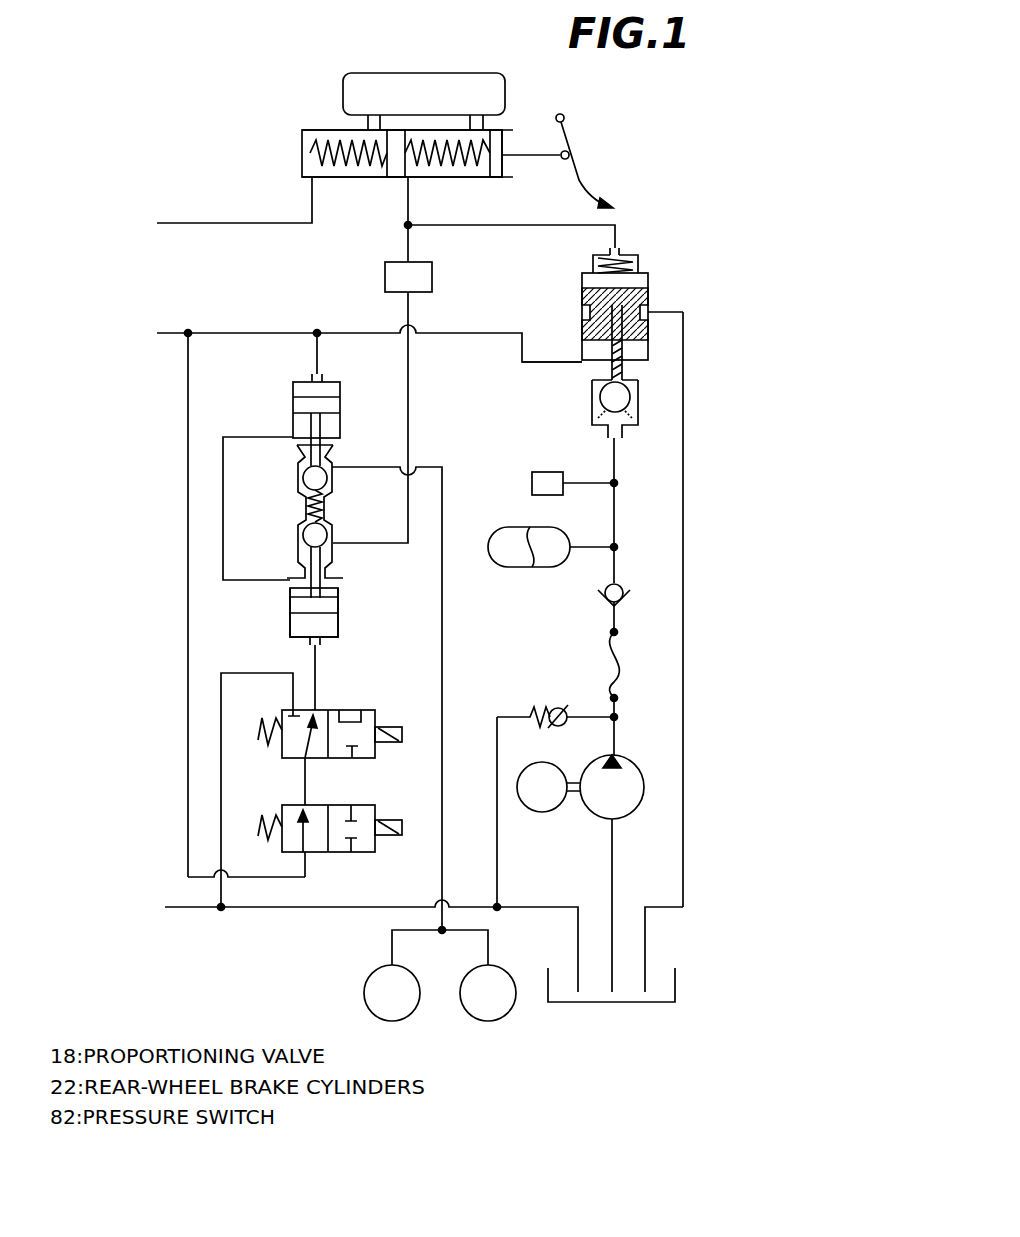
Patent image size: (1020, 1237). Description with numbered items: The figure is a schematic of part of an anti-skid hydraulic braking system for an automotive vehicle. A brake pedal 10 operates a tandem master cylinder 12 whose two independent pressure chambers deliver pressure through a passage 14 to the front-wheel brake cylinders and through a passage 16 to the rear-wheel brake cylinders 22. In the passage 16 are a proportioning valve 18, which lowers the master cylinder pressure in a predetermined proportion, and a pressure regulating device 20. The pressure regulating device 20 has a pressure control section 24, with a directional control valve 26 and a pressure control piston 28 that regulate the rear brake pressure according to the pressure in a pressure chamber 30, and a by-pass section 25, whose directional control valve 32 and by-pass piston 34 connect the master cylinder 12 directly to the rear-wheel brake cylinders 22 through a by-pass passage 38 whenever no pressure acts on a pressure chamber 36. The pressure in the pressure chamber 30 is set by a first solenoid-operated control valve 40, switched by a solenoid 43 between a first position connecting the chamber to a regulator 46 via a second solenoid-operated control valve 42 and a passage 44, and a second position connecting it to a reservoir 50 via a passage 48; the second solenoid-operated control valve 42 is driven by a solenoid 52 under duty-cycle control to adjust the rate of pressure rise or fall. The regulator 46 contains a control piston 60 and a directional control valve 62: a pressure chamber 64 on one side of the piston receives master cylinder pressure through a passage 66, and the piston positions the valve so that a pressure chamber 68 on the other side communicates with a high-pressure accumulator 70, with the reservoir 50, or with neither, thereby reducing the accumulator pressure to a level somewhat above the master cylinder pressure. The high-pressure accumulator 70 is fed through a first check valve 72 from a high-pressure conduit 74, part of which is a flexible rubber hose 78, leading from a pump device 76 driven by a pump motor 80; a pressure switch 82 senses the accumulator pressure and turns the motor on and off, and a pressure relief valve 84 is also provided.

The brake pedal 10 is at (582, 177).
The master cylinder 12 is at (352, 180).
The passage 14 is at (245, 222).
The passage 16 is at (410, 251).
The proportioning valve 18 is at (387, 283).
The pressure regulating device 20 is at (364, 436).
The rear-wheel brake cylinders 22 is at (377, 1000).
The pressure control section 24 is at (343, 585).
The by-pass section 25 is at (290, 467).
The directional control valve 26 is at (338, 558).
The pressure control piston 28 is at (334, 605).
The pressure chamber 30 is at (297, 620).
The directional control valve 32 is at (334, 479).
The by-pass piston 34 is at (293, 405).
The pressure chamber 36 is at (330, 387).
The by-pass passage 38 is at (323, 513).
The first solenoid-operated control valve 40 is at (335, 710).
The second solenoid-operated control valve 42 is at (320, 805).
The solenoid 43 is at (395, 727).
The passage 44 is at (188, 643).
The regulator 46 is at (637, 320).
The passage 48 is at (223, 810).
The reservoir 50 is at (604, 1003).
The solenoid 52 is at (395, 820).
The control piston 60 is at (650, 292).
The directional control valve 62 is at (590, 385).
The pressure chamber 64 is at (647, 270).
The passage 66 is at (536, 226).
The pressure chamber 68 is at (644, 358).
The high-pressure accumulator 70 is at (515, 535).
The first check valve 72 is at (604, 598).
The high-pressure conduit 74 is at (588, 764).
The pump device 76 is at (632, 770).
The flexible rubber hose 78 is at (603, 655).
The pump motor 80 is at (548, 812).
The pressure switch 82 is at (548, 472).
The pressure relief valve 84 is at (548, 705).